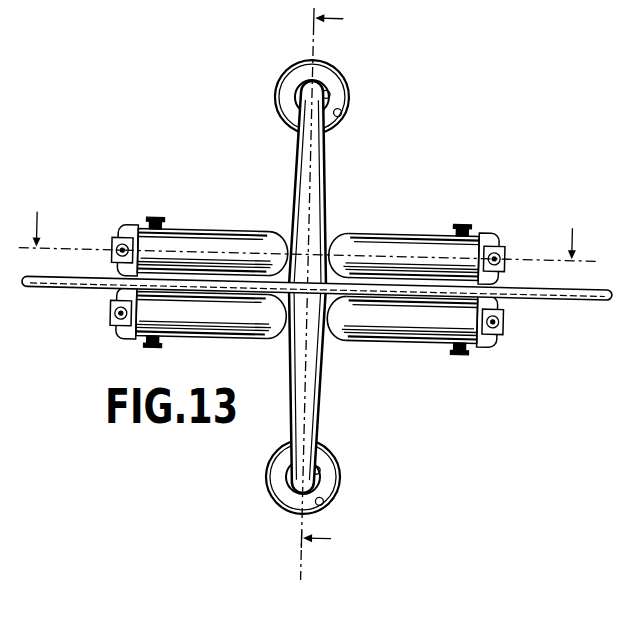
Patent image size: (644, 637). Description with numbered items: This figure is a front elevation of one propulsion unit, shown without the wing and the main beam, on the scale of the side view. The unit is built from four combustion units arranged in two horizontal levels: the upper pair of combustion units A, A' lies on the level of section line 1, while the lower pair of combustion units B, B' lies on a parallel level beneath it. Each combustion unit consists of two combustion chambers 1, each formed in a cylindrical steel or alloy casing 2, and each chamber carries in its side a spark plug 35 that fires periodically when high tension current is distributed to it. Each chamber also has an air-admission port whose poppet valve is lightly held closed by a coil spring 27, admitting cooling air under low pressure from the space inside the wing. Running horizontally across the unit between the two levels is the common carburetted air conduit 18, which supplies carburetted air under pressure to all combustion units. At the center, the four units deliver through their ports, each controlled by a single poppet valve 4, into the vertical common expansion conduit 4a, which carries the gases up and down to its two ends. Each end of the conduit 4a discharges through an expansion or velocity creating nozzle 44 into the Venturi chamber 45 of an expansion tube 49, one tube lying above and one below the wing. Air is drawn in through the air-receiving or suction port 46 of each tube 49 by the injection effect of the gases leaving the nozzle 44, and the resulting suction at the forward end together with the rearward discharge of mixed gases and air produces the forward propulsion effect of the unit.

The combustion chamber 1 is at (308, 235).
The cylindrical casing 2 is at (205, 229).
The poppet valve 4 is at (262, 251).
The common expansion conduit 4a is at (325, 185).
The common carburetted air conduit 18 is at (40, 292).
The coil spring 27 is at (114, 252).
The spark plug 35 is at (154, 219).
The expansion or velocity creating nozzle 44 is at (293, 97).
The Venturi chamber 45 is at (329, 95).
The air-receiving or suction port 46 is at (342, 112).
The expansion tube 49 is at (336, 70).
The combustion unit A is at (508, 238).
The combustion unit B is at (501, 337).
The combustion unit A' is at (112, 233).
The combustion unit B' is at (103, 331).